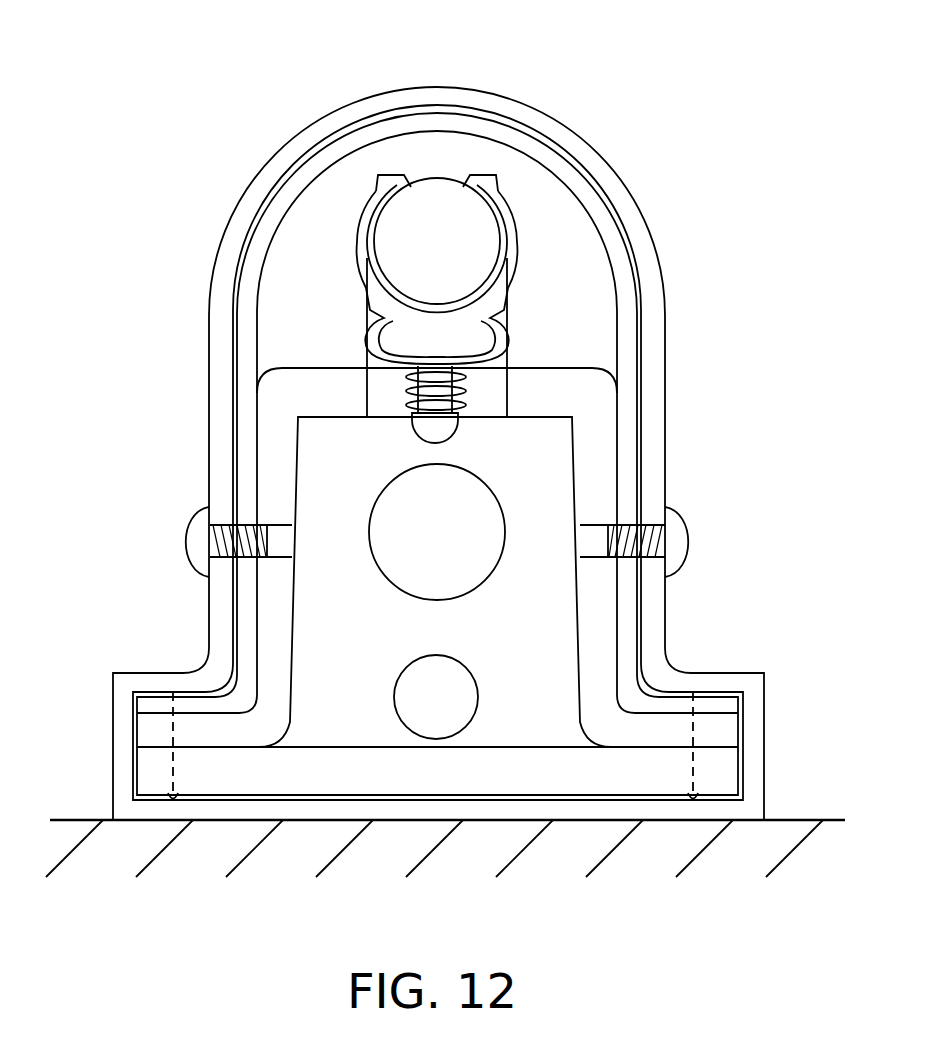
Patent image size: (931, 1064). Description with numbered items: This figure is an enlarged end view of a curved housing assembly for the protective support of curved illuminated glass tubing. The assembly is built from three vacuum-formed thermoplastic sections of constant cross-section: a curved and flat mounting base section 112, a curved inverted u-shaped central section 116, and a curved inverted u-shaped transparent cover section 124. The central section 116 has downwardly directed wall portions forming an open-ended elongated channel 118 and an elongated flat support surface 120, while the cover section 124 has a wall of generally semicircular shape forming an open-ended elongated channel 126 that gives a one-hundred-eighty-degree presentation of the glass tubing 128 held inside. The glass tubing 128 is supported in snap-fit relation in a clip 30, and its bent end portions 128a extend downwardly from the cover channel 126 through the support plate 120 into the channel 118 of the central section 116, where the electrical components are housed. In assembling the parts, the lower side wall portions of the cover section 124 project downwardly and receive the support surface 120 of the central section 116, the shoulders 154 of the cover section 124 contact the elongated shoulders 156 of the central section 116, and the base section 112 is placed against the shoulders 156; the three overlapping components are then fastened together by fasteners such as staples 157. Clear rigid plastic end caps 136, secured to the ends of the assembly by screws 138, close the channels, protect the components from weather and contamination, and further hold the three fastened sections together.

The clip 30 is at (512, 258).
The mounting base section 112 is at (628, 775).
The central section 116 is at (250, 432).
The channel 118 is at (555, 640).
The support surface 120 is at (317, 382).
The cover section 124 is at (394, 125).
The channel 126 is at (310, 228).
The glass tubing 128 is at (457, 236).
The end portions 128a is at (488, 458).
The end cap 136 is at (349, 116).
The screw 138 is at (195, 523).
The shoulders 154 is at (215, 705).
The shoulders 156 is at (157, 733).
The staple 157 is at (173, 774).